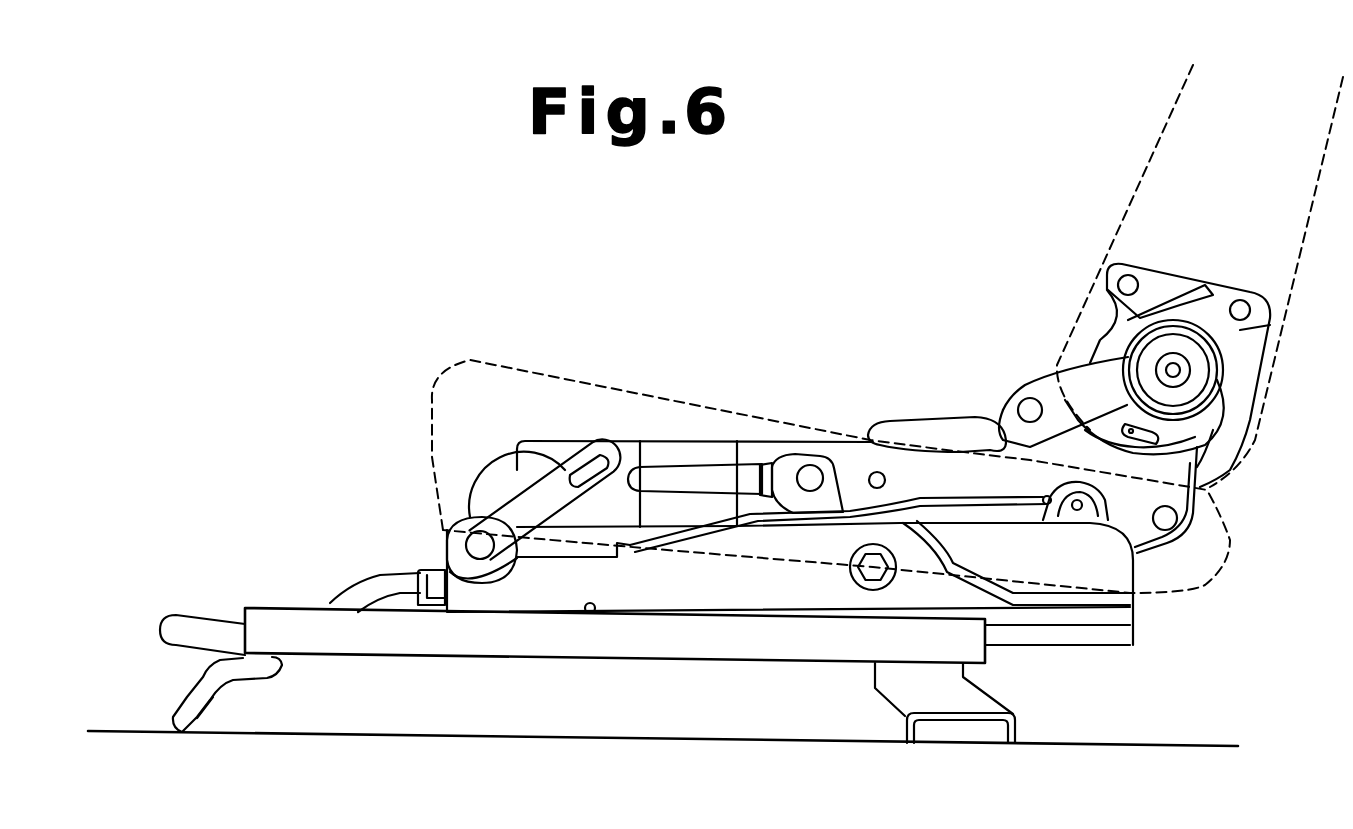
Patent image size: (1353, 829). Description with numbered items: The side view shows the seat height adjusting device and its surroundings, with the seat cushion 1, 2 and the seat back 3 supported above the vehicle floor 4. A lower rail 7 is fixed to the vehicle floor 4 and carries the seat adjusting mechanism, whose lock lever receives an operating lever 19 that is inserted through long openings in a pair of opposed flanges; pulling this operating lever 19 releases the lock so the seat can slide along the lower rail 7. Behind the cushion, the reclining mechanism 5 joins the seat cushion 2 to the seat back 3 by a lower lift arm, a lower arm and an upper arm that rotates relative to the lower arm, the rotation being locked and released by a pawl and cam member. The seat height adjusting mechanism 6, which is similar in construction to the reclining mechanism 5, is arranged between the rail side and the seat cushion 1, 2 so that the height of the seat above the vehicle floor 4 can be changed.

The seat cushion 1 is at (811, 387).
The seat cushion 2 is at (585, 412).
The seat back 3 is at (1158, 162).
The vehicle floor 4 is at (1164, 759).
The reclining mechanism 5 is at (1276, 390).
The seat height adjusting mechanism 6 is at (1137, 497).
The lower rail 7 is at (655, 668).
The operating lever 19 is at (199, 626).